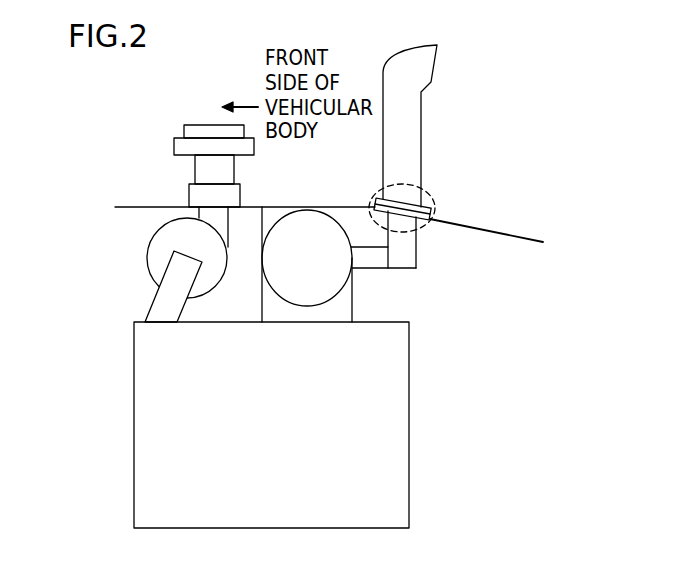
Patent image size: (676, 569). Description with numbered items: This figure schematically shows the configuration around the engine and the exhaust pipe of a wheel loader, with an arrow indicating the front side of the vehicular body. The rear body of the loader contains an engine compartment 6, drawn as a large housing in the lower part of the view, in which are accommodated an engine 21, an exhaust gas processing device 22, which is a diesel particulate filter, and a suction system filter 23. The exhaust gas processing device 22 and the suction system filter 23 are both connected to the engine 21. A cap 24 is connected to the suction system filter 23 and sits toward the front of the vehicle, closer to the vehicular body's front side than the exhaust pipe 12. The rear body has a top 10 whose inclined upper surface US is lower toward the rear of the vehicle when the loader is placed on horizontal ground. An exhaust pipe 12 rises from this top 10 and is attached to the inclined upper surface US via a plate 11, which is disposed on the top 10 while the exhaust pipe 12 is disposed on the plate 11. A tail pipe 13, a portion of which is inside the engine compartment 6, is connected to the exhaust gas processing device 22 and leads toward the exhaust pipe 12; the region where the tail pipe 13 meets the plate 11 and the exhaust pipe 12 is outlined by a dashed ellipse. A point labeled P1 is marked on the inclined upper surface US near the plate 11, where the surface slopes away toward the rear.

The engine compartment 6 is at (294, 326).
The top 10 is at (463, 223).
The plate 11 is at (433, 216).
The exhaust pipe 12 is at (405, 130).
The tail pipe 13 is at (404, 193).
The engine 21 is at (387, 422).
The exhaust gas processing device 22 is at (302, 228).
The suction system filter 23 is at (168, 237).
The cap 24 is at (188, 147).
The point P1 is at (434, 221).
The inclined upper surface US is at (513, 233).